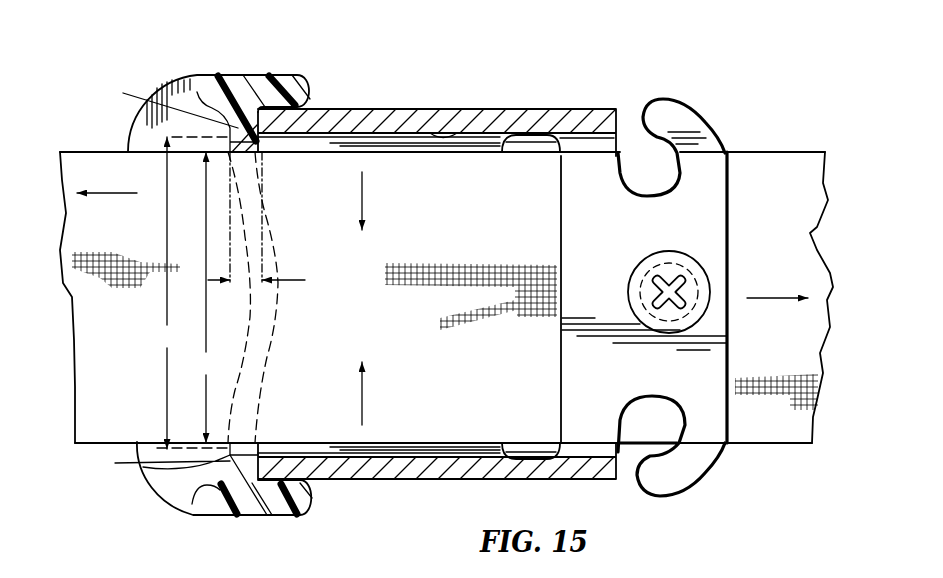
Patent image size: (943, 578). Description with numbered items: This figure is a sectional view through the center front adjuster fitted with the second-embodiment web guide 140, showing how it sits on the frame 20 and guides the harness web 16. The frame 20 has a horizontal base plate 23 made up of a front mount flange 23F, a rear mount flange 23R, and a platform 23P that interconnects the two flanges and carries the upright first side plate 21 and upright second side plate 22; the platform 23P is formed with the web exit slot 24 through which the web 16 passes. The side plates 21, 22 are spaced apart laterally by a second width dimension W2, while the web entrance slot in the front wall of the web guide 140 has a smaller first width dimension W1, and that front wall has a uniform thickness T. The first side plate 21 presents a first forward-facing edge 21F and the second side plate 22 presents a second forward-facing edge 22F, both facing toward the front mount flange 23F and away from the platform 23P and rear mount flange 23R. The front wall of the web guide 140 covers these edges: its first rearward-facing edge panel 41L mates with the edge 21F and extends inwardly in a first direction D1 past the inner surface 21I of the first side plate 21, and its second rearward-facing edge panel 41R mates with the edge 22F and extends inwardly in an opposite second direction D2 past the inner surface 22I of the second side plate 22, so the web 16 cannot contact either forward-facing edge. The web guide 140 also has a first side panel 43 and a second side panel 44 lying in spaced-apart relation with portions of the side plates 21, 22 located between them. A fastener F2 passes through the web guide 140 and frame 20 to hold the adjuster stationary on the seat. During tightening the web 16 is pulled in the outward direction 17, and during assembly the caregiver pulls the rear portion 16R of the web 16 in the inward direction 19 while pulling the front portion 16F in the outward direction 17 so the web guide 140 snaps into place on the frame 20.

The web 16 is at (760, 160).
The front portion of web 16F is at (65, 167).
The rear portion of web 16R is at (783, 445).
The outward direction 17 is at (118, 194).
The inward direction 19 is at (773, 300).
The frame 20 is at (140, 478).
The upright first side plate 21 is at (396, 106).
The first forward-facing edge 21F is at (248, 95).
The inner surface of first side plate 21I is at (450, 138).
The upright second side plate 22 is at (391, 482).
The second forward-facing edge 22F is at (236, 478).
The inner surface of second side plate 22I is at (445, 455).
The horizontal base plate 23 is at (685, 94).
The front mount flange 23F is at (167, 93).
The platform 23P is at (327, 142).
The rear mount flange 23R is at (720, 228).
The web exit slot 24 is at (530, 143).
The first rearward-facing edge panel 41L is at (163, 103).
The second rearward-facing edge panel 41R is at (172, 483).
The first side panel 43 is at (286, 71).
The second side panel 44 is at (242, 517).
The web guide 140 is at (298, 517).
The fastener F2 is at (661, 262).
The first direction D1 is at (363, 192).
The second direction D2 is at (363, 393).
The first width dimension W1 is at (200, 297).
The second width dimension W2 is at (188, 293).
The thickness T is at (278, 280).